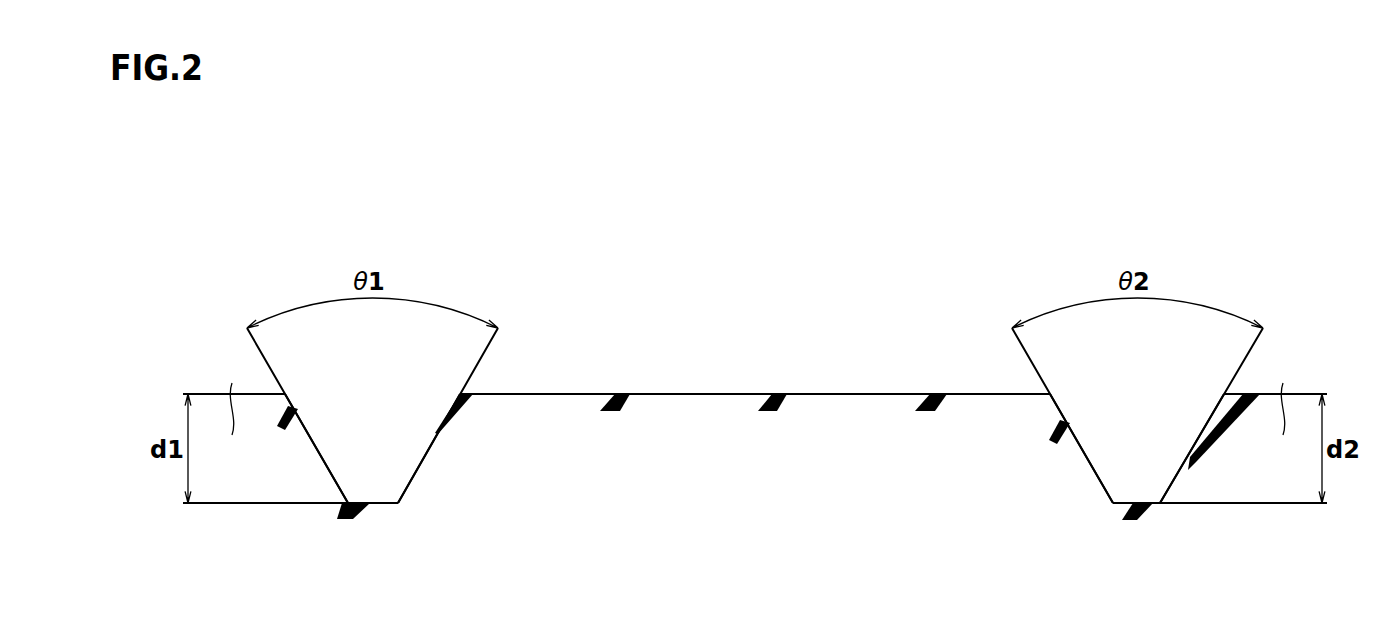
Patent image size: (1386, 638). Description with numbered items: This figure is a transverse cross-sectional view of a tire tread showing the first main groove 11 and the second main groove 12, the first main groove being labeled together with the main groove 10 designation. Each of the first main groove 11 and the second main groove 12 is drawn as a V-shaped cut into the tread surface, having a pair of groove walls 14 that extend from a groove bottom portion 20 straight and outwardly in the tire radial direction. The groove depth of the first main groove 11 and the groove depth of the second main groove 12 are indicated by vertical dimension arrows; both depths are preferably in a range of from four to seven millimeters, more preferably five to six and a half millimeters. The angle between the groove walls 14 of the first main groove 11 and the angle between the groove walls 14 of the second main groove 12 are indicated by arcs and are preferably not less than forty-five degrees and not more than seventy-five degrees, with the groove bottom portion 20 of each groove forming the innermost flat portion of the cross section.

The groove 10 is at (372, 414).
The first main groove 11 is at (366, 428).
The second main groove 12 is at (1133, 428).
The groove walls 14 is at (313, 436).
The groove bottom portion 20 is at (382, 494).